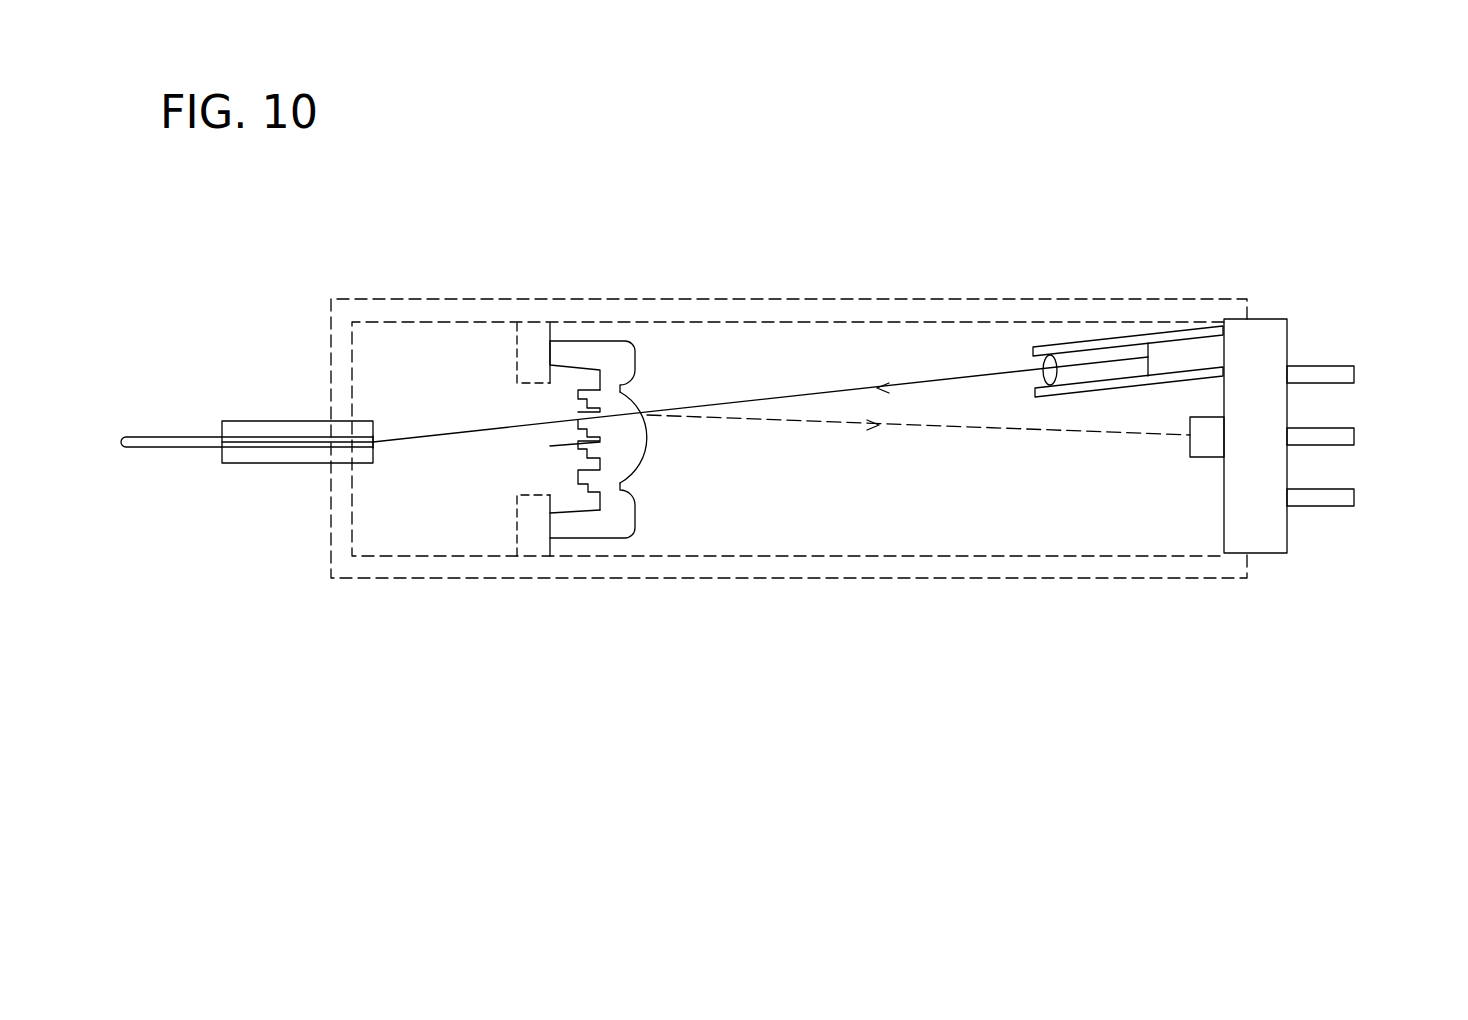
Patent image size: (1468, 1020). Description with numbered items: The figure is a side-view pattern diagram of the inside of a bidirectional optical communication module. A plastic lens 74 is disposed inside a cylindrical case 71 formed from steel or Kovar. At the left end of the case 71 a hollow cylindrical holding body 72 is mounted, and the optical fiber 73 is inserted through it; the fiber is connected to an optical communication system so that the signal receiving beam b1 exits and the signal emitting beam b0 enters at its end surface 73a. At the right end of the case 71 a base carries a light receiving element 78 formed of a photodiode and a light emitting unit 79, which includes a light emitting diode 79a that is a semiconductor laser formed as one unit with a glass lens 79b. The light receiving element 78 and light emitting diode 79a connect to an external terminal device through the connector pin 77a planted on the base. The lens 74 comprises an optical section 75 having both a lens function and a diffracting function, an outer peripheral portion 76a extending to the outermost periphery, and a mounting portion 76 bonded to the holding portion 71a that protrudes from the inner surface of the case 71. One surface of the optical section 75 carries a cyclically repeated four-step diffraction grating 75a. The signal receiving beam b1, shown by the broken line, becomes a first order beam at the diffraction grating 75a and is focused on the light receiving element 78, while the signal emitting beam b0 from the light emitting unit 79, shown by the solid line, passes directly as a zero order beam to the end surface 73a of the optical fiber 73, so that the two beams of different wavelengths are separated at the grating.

The cylindrical case 71 is at (858, 297).
The holding portion 71a is at (528, 347).
The hollow cylindrical holding body 72 is at (272, 463).
The optical fiber 73 is at (162, 448).
The end surface 73a is at (373, 443).
The plastic lens 74 is at (642, 383).
The optical section 75 is at (643, 470).
The diffraction grating 75a is at (550, 446).
The mounting portion 76 is at (567, 352).
The outer peripheral portion 76a is at (609, 385).
The connector pin 77a is at (1354, 377).
The light receiving element 78 is at (1208, 457).
The light emitting unit 79 is at (1107, 333).
The light emitting diode 79a is at (1193, 352).
The window 79b is at (1050, 357).
The signal emitting beam b0 is at (770, 398).
The signal receiving beam b1 is at (937, 428).